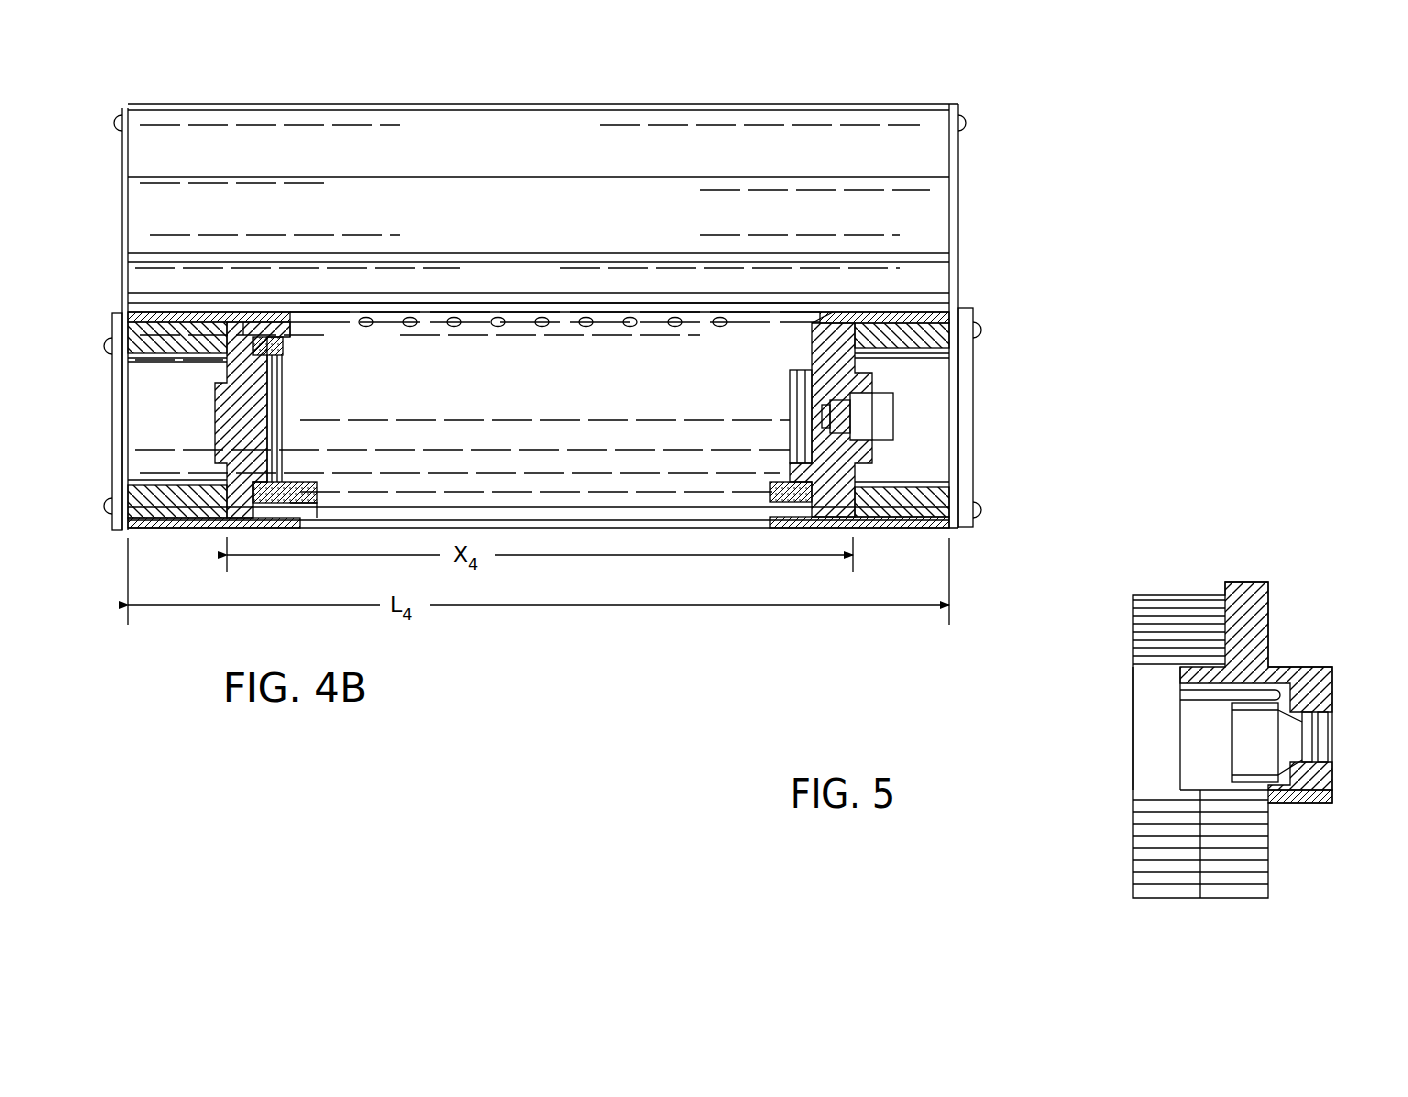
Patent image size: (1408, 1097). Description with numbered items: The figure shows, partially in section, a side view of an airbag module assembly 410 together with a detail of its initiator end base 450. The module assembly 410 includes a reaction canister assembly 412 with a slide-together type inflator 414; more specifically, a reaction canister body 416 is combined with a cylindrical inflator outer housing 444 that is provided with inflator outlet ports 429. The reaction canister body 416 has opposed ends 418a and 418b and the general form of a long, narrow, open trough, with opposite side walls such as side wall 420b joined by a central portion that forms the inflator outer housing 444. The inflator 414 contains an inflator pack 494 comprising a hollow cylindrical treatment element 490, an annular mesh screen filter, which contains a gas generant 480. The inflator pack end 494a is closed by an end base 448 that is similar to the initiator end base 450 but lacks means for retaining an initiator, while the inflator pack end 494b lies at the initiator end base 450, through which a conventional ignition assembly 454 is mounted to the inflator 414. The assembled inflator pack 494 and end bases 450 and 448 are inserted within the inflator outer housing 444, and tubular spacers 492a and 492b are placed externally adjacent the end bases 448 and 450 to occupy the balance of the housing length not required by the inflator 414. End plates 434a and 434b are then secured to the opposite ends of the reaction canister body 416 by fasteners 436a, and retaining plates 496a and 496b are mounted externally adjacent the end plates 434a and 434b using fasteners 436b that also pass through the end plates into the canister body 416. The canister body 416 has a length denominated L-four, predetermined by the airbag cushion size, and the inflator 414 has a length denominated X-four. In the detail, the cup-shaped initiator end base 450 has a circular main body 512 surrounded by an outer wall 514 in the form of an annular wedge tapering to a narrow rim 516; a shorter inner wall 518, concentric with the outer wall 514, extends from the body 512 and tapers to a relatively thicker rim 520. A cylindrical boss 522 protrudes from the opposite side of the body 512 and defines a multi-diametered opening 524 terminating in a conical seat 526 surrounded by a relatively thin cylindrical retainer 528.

In FIG. 4B, the airbag module assembly 410 is at (993, 140).
In FIG. 4B, the reaction canister assembly 412 is at (285, 243).
In FIG. 4B, the slide-together type inflator 414 is at (765, 325).
In FIG. 4B, the reaction canister body 416 is at (905, 308).
In FIG. 4B, the opposed end 418a is at (150, 335).
In FIG. 4B, the opposed end 418b is at (945, 312).
In FIG. 4B, the second side wall 420b is at (528, 220).
In FIG. 4B, the inflator outlet ports 429 is at (630, 318).
In FIG. 4B, the end plate 434a is at (122, 218).
In FIG. 4B, the end plate 434b is at (958, 205).
In FIG. 4B, the fasteners 436a is at (112, 120).
In FIG. 4B, the fasteners 436b is at (982, 330).
In FIG. 4B, the cylindrical inflator outer housing 444 is at (332, 335).
In FIG. 4B, the end base 448 is at (243, 320).
In FIG. 4B, the initiator end base 450 is at (812, 350).
In FIG. 5, the initiator end base 450 is at (1115, 832).
In FIG. 4B, the ignition assembly 454 is at (893, 415).
In FIG. 4B, the gas generant 480 is at (226, 405).
In FIG. 4B, the hollow cylindrical treatment element 490 is at (320, 490).
In FIG. 4B, the tubular spacer 492a is at (195, 503).
In FIG. 4B, the tubular spacer 492b is at (878, 505).
In FIG. 4B, the inflator pack 494 is at (283, 472).
In FIG. 4B, the opposite inflator pack end 494a is at (282, 360).
In FIG. 4B, the right plate 494b is at (790, 425).
In FIG. 4B, the retaining plate 496a is at (112, 460).
In FIG. 4B, the retaining plate 496b is at (975, 470).
In FIG. 5, the circular main body 512 is at (1268, 612).
In FIG. 5, the outer wall 514 is at (1145, 655).
In FIG. 5, the narrow rim 516 is at (1133, 618).
In FIG. 5, the inner wall 518 is at (1195, 768).
In FIG. 5, the relatively thicker rim 520 is at (1170, 695).
In FIG. 5, the cylindrical boss 522 is at (1300, 805).
In FIG. 5, the multi-diametered opening 524 is at (1312, 760).
In FIG. 5, the conical seat 526 is at (1310, 730).
In FIG. 5, the thin cylindrical retainer 528 is at (1240, 730).